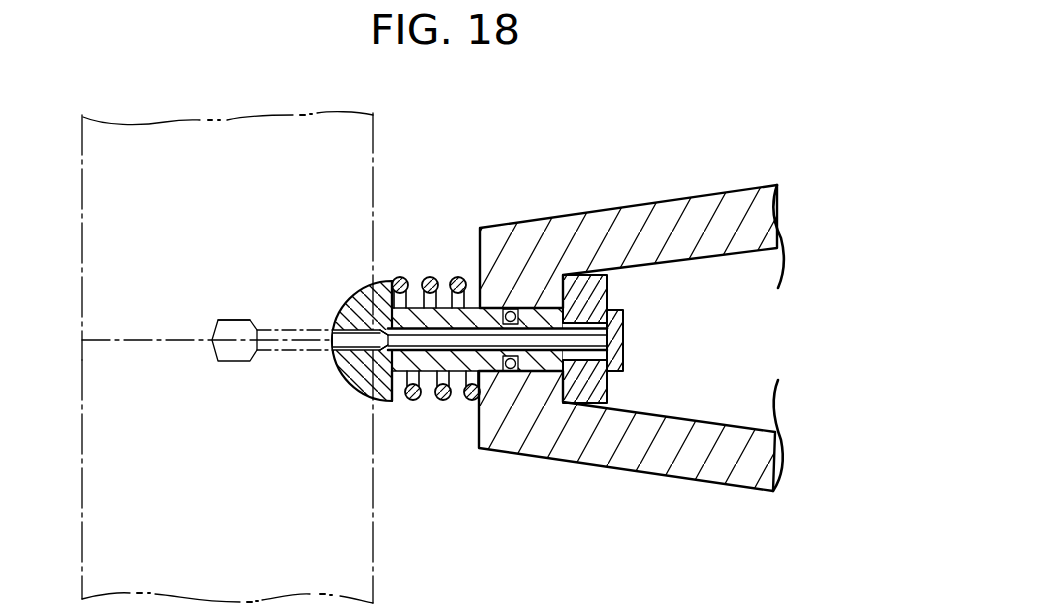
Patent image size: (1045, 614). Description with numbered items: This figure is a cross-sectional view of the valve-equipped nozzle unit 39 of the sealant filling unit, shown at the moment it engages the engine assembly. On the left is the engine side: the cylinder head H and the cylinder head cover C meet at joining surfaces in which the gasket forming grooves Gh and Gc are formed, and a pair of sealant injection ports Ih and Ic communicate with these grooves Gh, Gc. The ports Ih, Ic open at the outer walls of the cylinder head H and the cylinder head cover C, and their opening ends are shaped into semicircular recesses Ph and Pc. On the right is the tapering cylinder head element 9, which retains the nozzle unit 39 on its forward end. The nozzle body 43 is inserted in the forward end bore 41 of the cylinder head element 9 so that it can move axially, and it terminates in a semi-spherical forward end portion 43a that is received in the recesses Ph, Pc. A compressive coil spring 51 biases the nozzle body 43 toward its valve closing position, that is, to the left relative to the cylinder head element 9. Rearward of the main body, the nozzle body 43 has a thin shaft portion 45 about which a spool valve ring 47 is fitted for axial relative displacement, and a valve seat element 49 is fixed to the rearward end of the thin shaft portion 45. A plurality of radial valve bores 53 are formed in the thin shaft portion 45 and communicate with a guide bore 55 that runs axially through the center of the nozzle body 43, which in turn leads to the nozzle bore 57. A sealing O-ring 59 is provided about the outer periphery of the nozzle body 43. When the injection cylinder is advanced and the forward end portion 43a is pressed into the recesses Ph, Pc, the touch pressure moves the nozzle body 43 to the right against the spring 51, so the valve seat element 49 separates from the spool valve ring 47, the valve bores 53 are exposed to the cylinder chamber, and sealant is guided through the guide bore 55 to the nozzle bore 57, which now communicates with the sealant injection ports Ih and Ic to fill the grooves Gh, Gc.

The cylinder head cover C is at (350, 150).
The cylinder head H is at (348, 522).
The cylinder head element 9 is at (698, 491).
The nozzle unit 39 is at (413, 262).
The forward end bore 41 is at (527, 327).
The nozzle body 43 is at (444, 307).
The semi-spherical forward end portion 43a is at (358, 316).
The thin shaft portion 45 is at (560, 400).
The spool valve ring 47 is at (587, 275).
The valve seat element 49 is at (623, 340).
The compressive coil spring 51 is at (411, 401).
The valve bores 53 is at (622, 262).
The guide bore 55 is at (502, 308).
The nozzle bore 57 is at (359, 378).
The sealing O-ring 59 is at (506, 372).
The semicircular recess Pc is at (385, 288).
The semicircular recess Ph is at (364, 400).
The gasket forming groove Gc is at (222, 320).
The gasket forming groove Gh is at (229, 361).
The sealant injection port Ic is at (270, 329).
The sealant injection port Ih is at (283, 351).